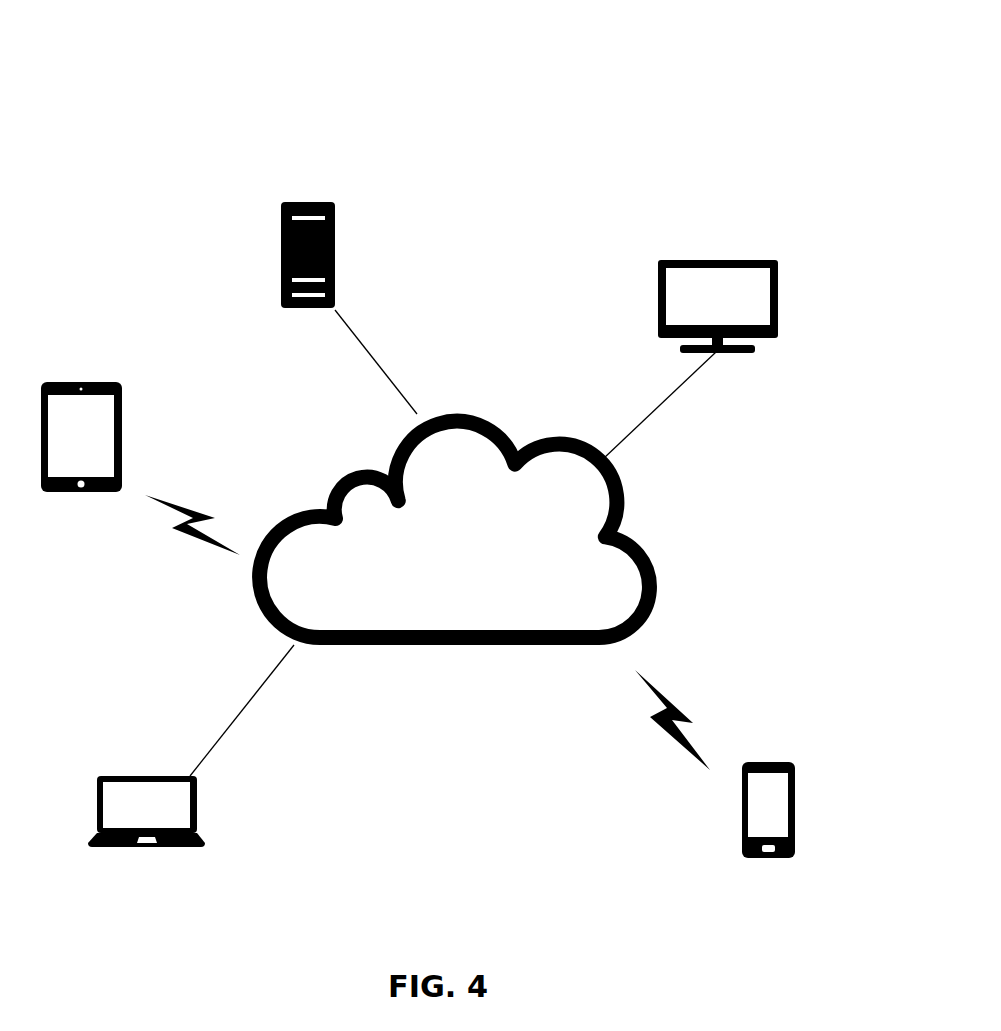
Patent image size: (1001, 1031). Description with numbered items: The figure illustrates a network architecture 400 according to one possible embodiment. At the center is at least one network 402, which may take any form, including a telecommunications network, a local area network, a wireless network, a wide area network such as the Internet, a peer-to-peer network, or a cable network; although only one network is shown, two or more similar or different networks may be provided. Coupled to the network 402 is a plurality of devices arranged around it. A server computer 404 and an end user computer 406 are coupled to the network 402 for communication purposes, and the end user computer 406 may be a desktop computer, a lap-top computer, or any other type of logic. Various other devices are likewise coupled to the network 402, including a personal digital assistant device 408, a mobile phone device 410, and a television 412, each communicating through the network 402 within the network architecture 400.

The network architecture 400 is at (82, 72).
The network 402 is at (467, 646).
The server computer 404 is at (307, 201).
The end user computer 406 is at (143, 775).
The personal digital assistant (PDA) device 408 is at (82, 381).
The mobile phone device 410 is at (760, 761).
The television 412 is at (722, 260).